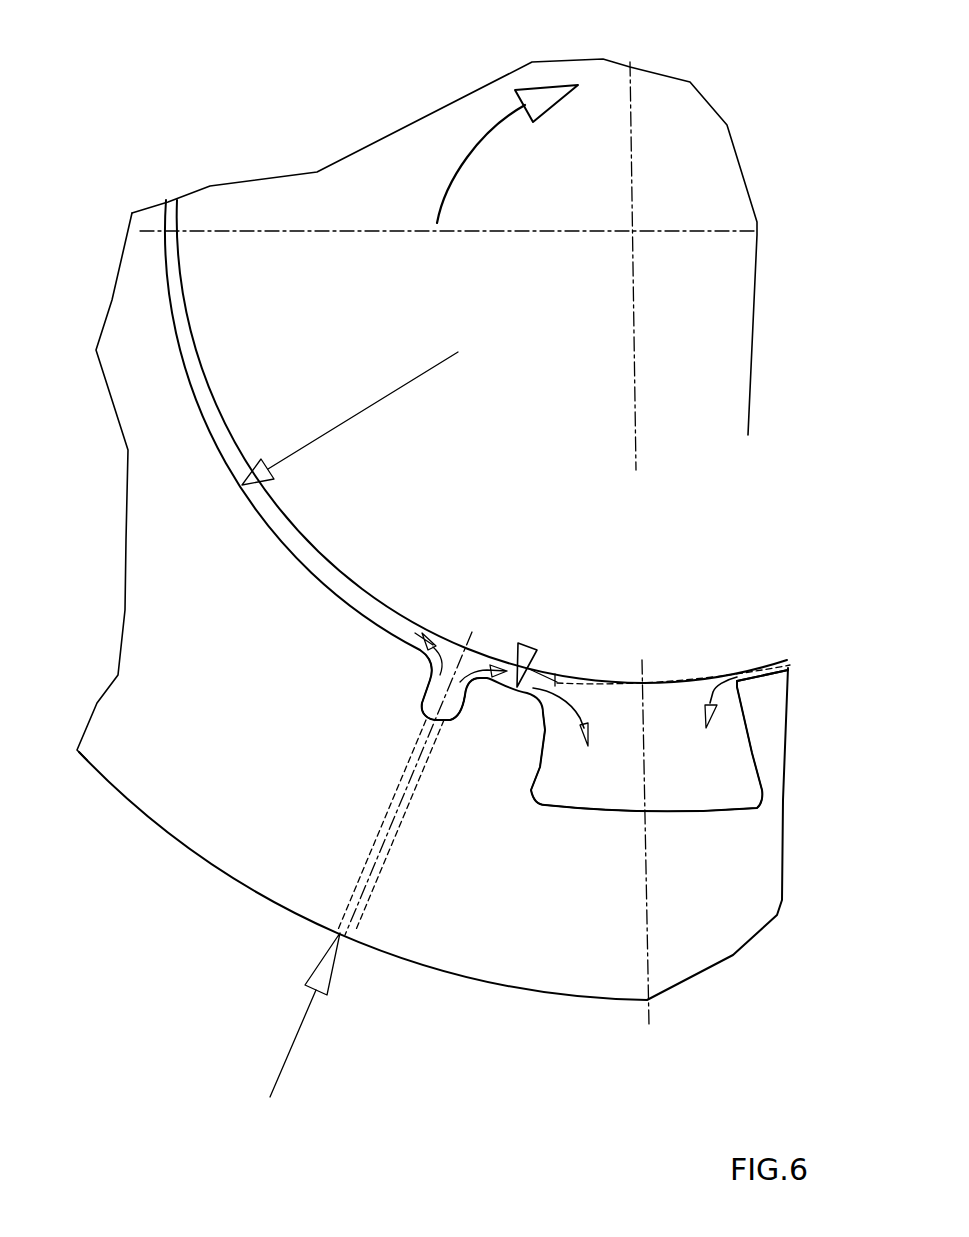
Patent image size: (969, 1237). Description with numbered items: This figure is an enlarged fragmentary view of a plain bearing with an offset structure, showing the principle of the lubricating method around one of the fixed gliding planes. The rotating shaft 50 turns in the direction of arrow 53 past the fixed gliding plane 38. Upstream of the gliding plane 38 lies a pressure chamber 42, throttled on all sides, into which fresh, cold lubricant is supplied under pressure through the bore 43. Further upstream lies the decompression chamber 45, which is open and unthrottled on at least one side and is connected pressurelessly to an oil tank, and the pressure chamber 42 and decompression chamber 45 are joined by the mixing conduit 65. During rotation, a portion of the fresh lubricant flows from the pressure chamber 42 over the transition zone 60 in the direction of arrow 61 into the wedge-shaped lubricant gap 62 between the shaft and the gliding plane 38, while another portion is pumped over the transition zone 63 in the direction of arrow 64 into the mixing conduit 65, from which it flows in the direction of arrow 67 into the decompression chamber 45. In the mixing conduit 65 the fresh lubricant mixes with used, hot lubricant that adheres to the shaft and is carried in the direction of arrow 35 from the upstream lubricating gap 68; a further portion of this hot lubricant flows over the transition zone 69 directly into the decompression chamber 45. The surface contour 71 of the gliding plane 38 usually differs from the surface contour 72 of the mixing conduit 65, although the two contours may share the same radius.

The arrow 35 is at (632, 693).
The fixed gliding plane 38 is at (210, 438).
The pressure chamber 42 is at (423, 703).
The bore 43 is at (388, 815).
The decompression chamber 45 is at (615, 757).
The rotating shaft 50 is at (197, 345).
The arrow 53 is at (467, 147).
The transition zone 60 is at (432, 660).
The arrow 61 is at (423, 623).
The wedge-shaped lubricant gap 62 is at (212, 413).
The transition zone 63 is at (475, 692).
The arrow 64 is at (470, 632).
The mixing conduit 65 is at (530, 668).
The arrow 67 is at (584, 745).
The upstream lubricating gap 68 is at (773, 663).
The transition zone 69 is at (737, 670).
The surface contour 71 is at (369, 405).
The surface contour 72 is at (522, 645).